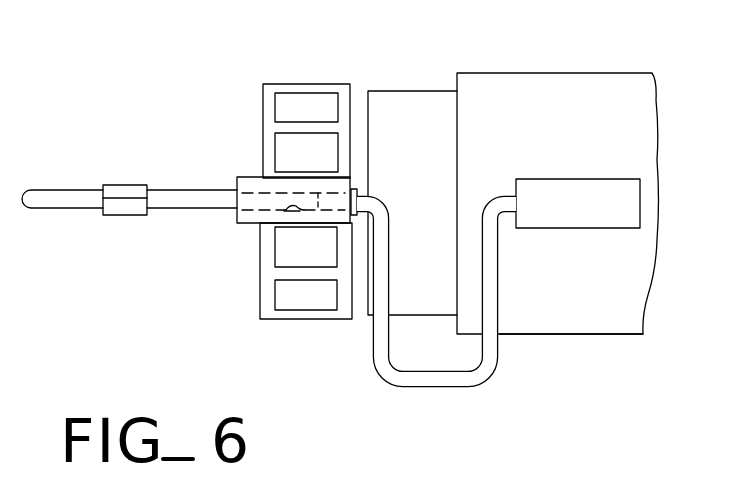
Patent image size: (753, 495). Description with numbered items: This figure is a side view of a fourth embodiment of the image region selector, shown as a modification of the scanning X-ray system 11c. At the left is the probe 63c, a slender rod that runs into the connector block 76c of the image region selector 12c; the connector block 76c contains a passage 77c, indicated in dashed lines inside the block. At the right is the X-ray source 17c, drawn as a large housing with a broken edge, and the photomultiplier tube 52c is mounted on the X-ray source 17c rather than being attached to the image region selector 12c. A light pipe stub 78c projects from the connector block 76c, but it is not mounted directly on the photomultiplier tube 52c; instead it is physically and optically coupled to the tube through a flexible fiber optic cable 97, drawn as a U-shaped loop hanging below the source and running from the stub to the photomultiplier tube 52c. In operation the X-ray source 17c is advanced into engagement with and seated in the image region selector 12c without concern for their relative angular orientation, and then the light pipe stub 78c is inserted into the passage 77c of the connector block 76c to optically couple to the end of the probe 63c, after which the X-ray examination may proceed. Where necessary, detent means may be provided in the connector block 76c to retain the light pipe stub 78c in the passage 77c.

The scanning X-ray system 11c is at (582, 62).
The image region selector 12c is at (173, 258).
The X-ray source 17c is at (577, 335).
The photomultiplier tube 52c is at (560, 178).
The probe 63c is at (180, 192).
The connector block 76c is at (243, 177).
The passage 77c is at (287, 207).
The light pipe stub 78c is at (338, 194).
The flexible fiber optic cable 97 is at (475, 386).